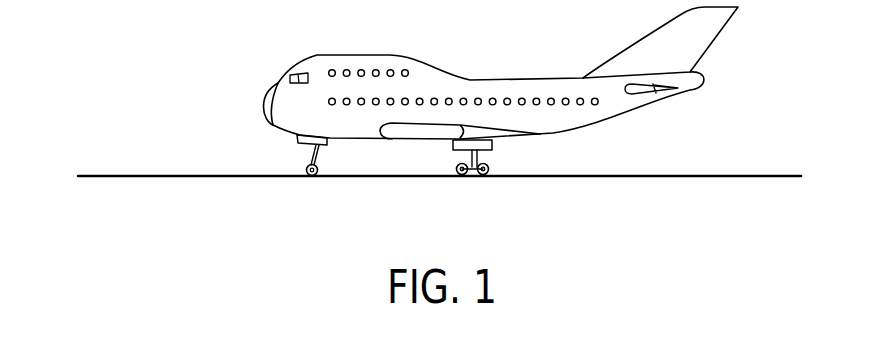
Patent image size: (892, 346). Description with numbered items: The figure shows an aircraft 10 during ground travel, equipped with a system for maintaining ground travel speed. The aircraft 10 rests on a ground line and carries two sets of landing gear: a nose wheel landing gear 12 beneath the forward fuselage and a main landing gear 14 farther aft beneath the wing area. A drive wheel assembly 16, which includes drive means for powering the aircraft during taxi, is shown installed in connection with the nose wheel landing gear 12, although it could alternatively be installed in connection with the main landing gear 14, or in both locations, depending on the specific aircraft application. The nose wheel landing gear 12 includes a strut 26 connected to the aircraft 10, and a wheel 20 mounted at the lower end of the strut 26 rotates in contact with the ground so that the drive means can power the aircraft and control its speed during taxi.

The aircraft 10 is at (433, 78).
The nose wheel landing gear 12 is at (306, 173).
The main landing gear 14 is at (488, 153).
The drive wheel assembly 16 is at (293, 162).
The wheel 20 is at (304, 187).
The strut 26 is at (305, 155).